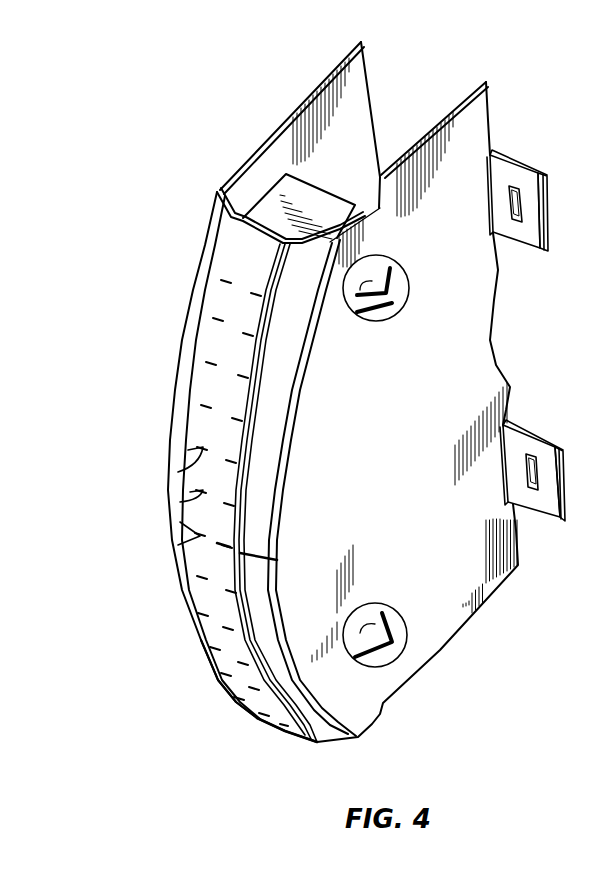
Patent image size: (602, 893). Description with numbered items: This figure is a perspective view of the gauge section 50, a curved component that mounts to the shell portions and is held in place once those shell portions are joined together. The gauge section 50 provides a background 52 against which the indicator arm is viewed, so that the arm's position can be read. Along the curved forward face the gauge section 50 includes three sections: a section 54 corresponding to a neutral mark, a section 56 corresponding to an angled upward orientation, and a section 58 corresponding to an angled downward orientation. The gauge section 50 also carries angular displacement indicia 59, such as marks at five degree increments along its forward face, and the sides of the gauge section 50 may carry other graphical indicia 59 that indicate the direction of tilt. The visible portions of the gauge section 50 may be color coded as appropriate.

The gauge section 50 is at (113, 308).
The background 52 is at (203, 433).
The section corresponding to a neutral mark 54 is at (190, 538).
The section corresponding to an angled upward orientation 56 is at (235, 302).
The section corresponding to an angled downward orientation 58 is at (223, 663).
The angular displacement indicia 59 is at (190, 492).